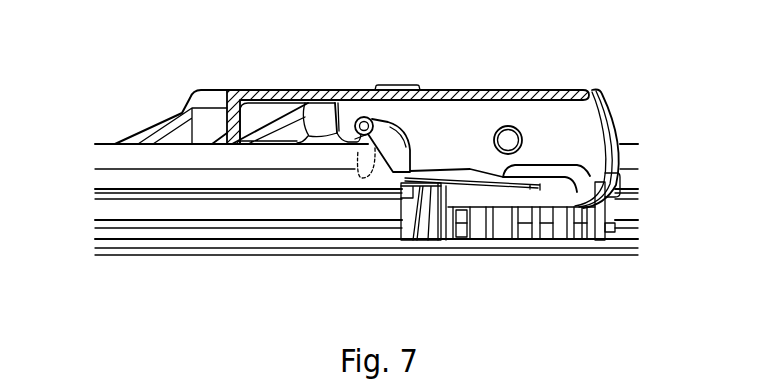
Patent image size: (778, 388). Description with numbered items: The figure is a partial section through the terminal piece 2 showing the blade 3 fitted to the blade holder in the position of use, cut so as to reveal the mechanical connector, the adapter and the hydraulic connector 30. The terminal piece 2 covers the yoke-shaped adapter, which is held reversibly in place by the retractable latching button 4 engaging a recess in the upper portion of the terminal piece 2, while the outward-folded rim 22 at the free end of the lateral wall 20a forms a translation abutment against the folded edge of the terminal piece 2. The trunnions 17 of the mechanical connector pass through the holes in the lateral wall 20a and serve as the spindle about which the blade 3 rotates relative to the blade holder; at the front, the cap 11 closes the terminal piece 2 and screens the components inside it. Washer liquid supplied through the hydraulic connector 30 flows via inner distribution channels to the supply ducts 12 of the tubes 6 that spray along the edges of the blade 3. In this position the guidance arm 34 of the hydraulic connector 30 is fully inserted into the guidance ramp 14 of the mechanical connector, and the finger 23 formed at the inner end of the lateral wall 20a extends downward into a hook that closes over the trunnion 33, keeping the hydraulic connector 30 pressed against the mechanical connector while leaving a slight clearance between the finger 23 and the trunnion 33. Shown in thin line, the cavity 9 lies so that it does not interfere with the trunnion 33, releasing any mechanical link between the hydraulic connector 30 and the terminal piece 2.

The terminal piece 2 is at (207, 100).
The blade 3 is at (97, 190).
The retractable latching button 4 is at (395, 85).
The tubes 6 is at (153, 236).
The cavity 9 is at (349, 184).
The cap 11 is at (608, 118).
The supply ducts 12 is at (433, 233).
The guidance ramp 14 is at (477, 188).
The trunnions 17 is at (516, 135).
The lateral wall 20a is at (464, 127).
The rim 22 is at (562, 175).
The finger 23 is at (338, 122).
The hydraulic connector 30 is at (290, 130).
The trunnion 33 is at (365, 117).
The guidance arm 34 is at (508, 186).